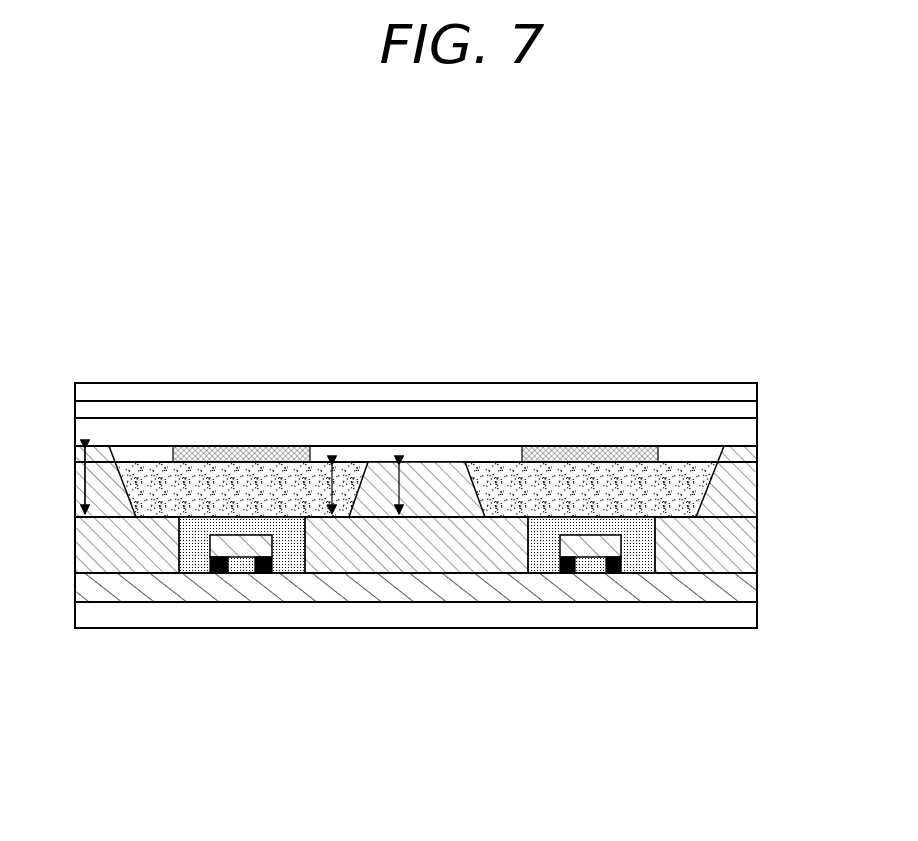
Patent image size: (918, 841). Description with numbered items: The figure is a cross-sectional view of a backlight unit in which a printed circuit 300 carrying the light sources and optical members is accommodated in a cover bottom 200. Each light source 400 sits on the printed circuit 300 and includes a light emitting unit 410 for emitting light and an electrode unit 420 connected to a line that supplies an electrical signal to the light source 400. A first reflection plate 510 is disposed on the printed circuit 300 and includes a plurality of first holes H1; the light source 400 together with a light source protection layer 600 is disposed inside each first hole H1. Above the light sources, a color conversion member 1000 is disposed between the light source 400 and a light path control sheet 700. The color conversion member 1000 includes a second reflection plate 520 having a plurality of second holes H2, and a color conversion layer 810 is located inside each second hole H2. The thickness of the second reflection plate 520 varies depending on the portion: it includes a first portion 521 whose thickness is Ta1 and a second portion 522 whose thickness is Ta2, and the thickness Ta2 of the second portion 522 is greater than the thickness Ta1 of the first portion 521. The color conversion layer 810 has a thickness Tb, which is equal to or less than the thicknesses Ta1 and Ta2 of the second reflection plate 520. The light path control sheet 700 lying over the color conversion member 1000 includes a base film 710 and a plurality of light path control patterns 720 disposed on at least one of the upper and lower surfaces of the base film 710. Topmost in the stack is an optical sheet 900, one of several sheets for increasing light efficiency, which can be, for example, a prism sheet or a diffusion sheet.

The cover bottom 200 is at (745, 617).
The printed circuit 300 is at (745, 588).
The light source 400 is at (415, 627).
The light emitting unit 410 is at (556, 546).
The electrode unit 420 is at (613, 575).
The first reflection plate 510 is at (745, 548).
The second reflection plate 520 is at (612, 286).
The first portion 521 is at (383, 463).
The second portion 522 is at (93, 455).
The light source protection layer 600 is at (193, 567).
The light path control sheet 700 is at (828, 427).
The base film 710 is at (745, 432).
The light path control pattern 720 is at (660, 452).
The color conversion layer 810 is at (700, 485).
The optical sheet 900 is at (763, 383).
The color conversion member 1000 is at (828, 478).
The first hole H1 is at (190, 556).
The second hole H2 is at (140, 491).
The thickness of the first portion Ta1 is at (383, 489).
The thickness of the second portion Ta2 is at (101, 481).
The thickness of the color conversion layer Tb is at (319, 489).